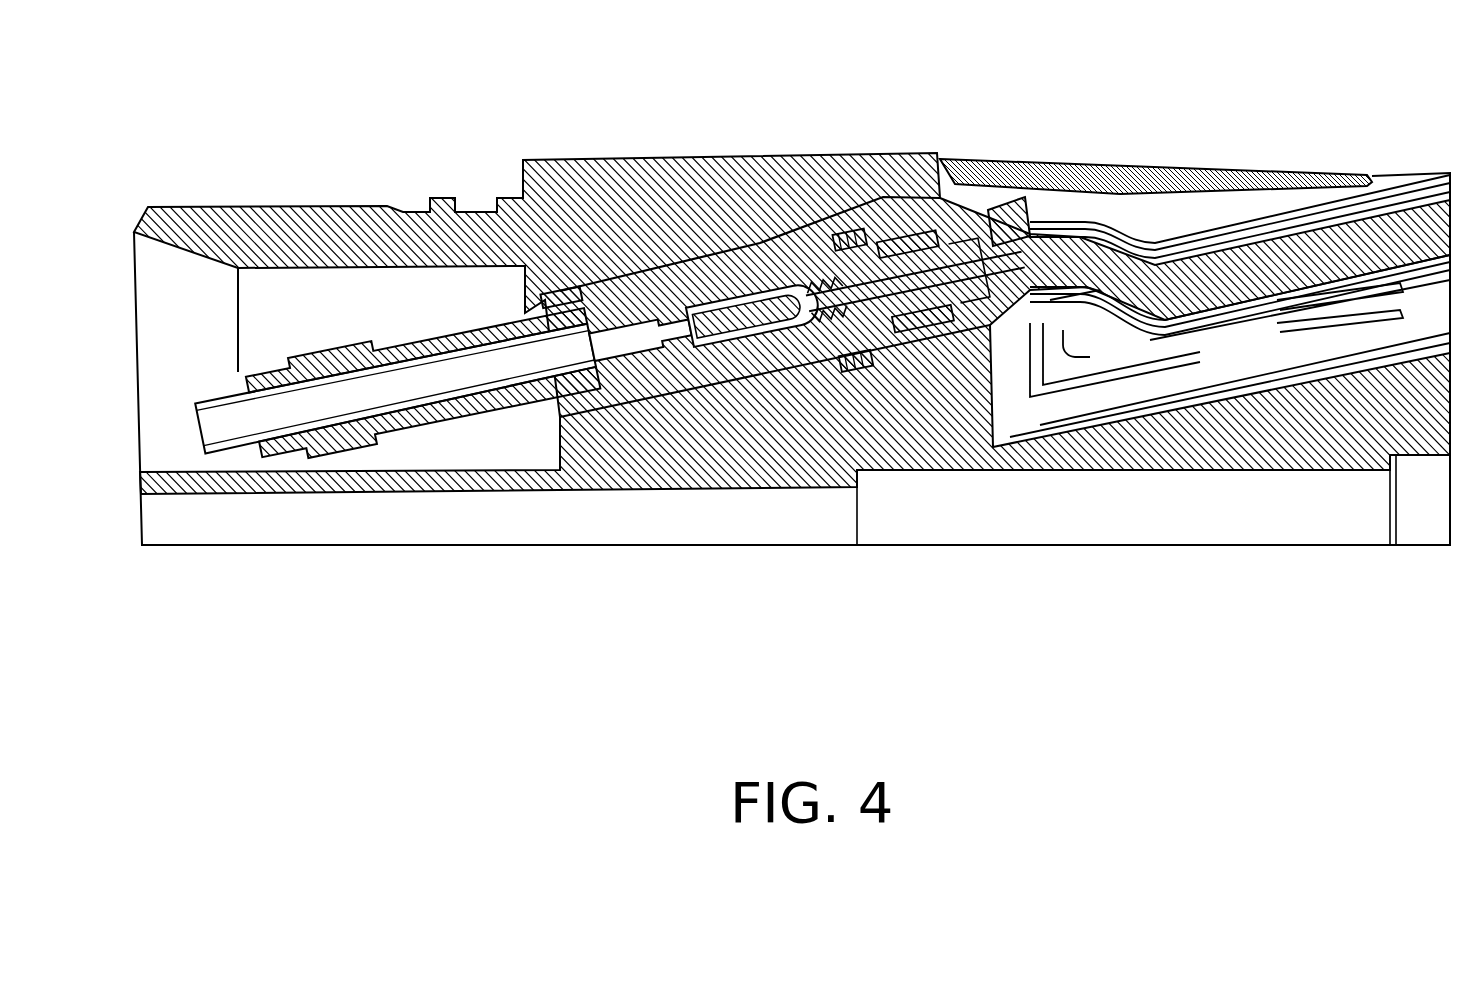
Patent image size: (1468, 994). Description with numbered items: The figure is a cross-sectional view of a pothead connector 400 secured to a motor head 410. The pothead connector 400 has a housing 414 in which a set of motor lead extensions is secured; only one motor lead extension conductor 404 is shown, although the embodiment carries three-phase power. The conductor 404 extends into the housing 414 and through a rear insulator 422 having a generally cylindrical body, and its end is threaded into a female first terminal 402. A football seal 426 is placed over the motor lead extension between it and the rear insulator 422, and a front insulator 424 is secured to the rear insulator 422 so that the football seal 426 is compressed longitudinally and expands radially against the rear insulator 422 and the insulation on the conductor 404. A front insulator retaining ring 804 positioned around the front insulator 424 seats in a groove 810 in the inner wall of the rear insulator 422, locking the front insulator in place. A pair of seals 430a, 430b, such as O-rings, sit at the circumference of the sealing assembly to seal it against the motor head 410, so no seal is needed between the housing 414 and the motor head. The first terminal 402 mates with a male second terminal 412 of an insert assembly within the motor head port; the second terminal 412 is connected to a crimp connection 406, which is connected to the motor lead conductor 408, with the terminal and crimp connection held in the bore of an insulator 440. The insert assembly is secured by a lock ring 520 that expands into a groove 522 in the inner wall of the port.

The pothead connector 400 is at (1056, 138).
The first terminal 402 is at (670, 275).
The motor lead extension conductor 404 is at (1383, 217).
The crimp connection 406 is at (522, 200).
The motor lead conductor 408 is at (203, 403).
The motor head 410 is at (855, 155).
The second terminal 412 is at (578, 312).
The housing 414 is at (1170, 170).
The rear insulator 422 is at (1040, 210).
The front insulator 424 is at (757, 285).
The football seal 426 is at (990, 210).
The seal 430a is at (847, 232).
The seal 430b is at (920, 205).
The insulator 440 is at (607, 420).
The lock ring 520 is at (847, 380).
The groove 522 is at (857, 380).
The front insulator retaining ring 804 is at (900, 380).
The groove 810 is at (917, 380).